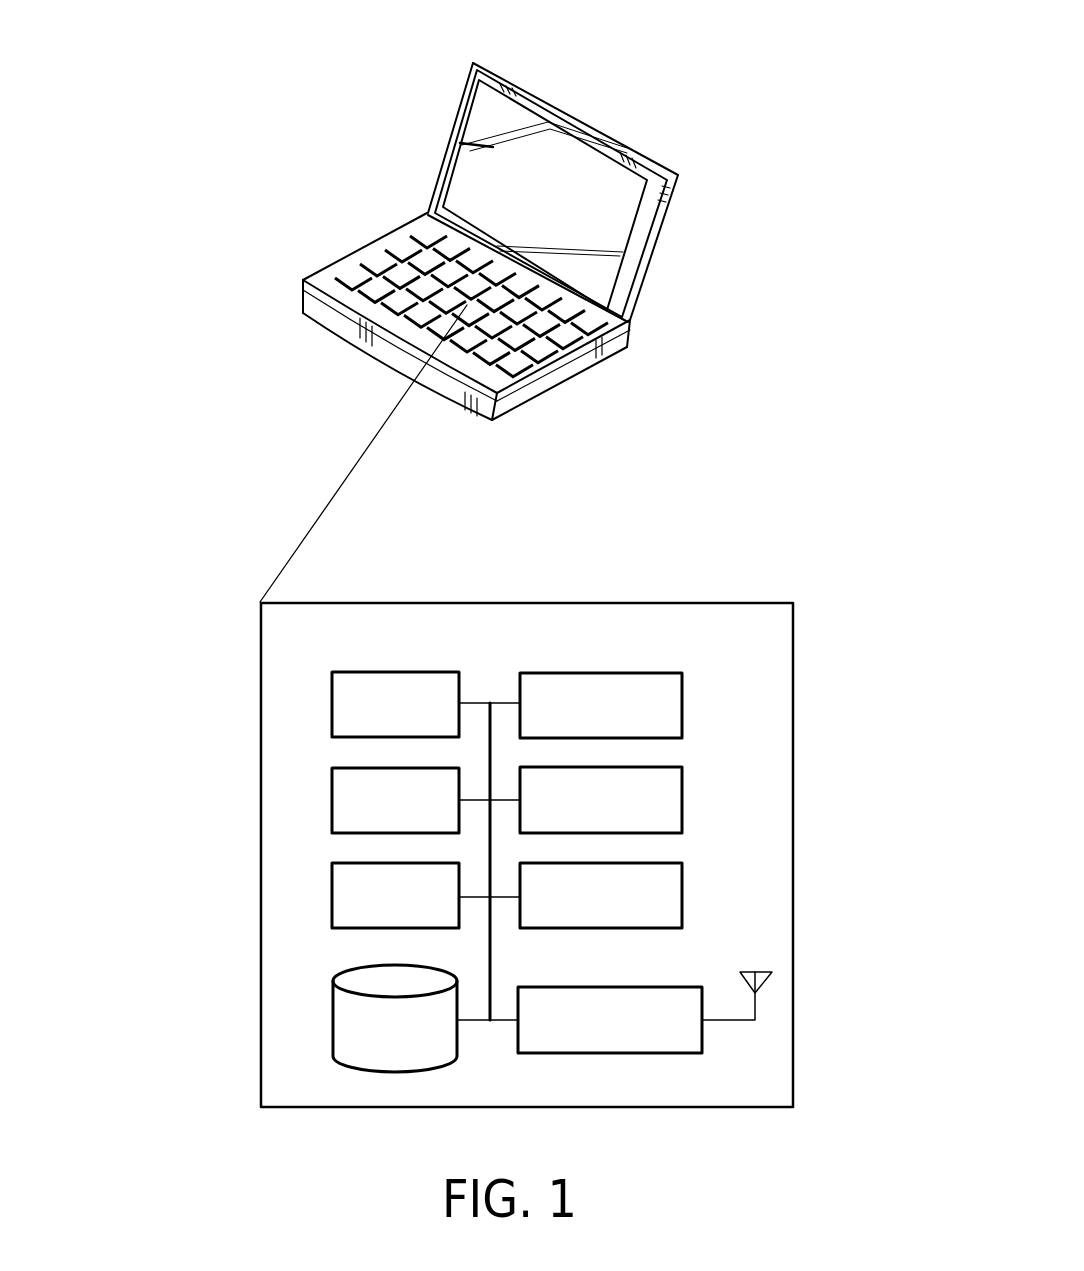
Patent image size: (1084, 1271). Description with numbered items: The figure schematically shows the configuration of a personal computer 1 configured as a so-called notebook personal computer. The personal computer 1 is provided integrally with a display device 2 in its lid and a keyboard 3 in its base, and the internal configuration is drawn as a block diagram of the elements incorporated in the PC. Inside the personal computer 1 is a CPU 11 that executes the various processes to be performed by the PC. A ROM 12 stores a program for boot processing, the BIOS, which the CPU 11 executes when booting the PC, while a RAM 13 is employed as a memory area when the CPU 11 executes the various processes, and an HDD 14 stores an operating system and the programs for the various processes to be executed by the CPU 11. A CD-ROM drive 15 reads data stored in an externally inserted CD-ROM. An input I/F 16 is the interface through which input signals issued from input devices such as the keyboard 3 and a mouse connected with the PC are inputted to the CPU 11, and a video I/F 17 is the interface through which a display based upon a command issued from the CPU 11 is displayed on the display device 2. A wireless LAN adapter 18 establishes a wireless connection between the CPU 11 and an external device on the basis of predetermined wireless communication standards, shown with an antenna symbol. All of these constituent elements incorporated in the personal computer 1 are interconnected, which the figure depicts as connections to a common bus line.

The personal computer 1 is at (622, 63).
The display device 2 is at (477, 150).
The keyboard 3 is at (520, 374).
The CPU 11 is at (332, 705).
The ROM 12 is at (332, 800).
The RAM 13 is at (332, 896).
The HDD 14 is at (333, 1038).
The CD-ROM drive 15 is at (682, 703).
The input I/F 16 is at (682, 803).
The video I/F 17 is at (682, 897).
The wireless LAN adapter 18 is at (593, 1053).